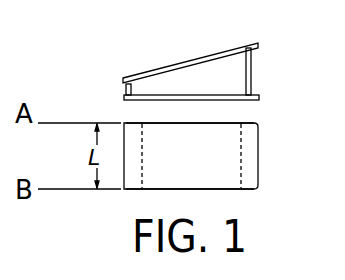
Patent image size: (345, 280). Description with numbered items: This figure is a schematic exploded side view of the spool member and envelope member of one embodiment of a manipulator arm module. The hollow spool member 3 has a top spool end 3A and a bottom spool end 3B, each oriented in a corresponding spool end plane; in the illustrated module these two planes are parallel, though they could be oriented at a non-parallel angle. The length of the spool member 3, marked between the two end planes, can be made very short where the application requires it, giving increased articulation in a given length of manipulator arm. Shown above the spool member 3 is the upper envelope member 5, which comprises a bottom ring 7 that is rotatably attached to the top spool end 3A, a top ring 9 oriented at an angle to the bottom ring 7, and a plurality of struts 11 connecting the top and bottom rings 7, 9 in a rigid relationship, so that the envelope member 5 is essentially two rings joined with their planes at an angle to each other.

The hollow spool member 3 is at (258, 152).
The top spool end 3A is at (232, 123).
The bottom spool end 3B is at (232, 189).
The upper envelope member 5 is at (124, 92).
The bottom ring 7 is at (259, 95).
The top ring 9 is at (233, 50).
The struts 11 is at (251, 67).